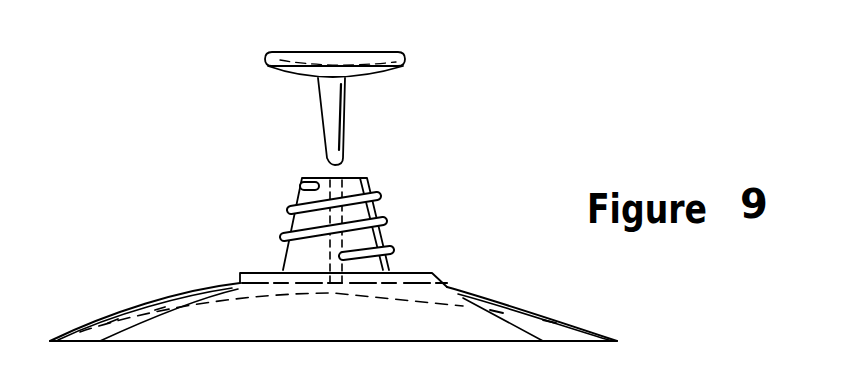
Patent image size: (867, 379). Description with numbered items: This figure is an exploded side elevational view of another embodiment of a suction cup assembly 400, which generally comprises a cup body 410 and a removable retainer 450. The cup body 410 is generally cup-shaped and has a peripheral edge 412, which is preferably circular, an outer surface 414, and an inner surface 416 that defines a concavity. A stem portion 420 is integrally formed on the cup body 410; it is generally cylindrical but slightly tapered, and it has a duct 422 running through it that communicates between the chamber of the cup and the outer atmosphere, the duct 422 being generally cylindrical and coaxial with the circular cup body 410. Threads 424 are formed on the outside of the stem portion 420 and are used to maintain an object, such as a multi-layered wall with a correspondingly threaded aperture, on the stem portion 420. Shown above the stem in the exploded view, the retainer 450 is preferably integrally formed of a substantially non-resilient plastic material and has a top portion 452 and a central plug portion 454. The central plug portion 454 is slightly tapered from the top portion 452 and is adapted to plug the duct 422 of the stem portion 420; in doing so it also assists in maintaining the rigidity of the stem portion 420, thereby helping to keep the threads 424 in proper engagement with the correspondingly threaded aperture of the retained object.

The suction cup assembly 400 is at (164, 197).
The cup body 410 is at (435, 275).
The peripheral edge 412 is at (621, 338).
The outer surface 414 is at (515, 302).
The inner surface 416 is at (472, 308).
The stem portion 420 is at (383, 207).
The duct 422 is at (330, 253).
The threads 424 is at (284, 234).
The retainer 450 is at (400, 73).
The top portion 452 is at (404, 60).
The central plug portion 454 is at (346, 120).